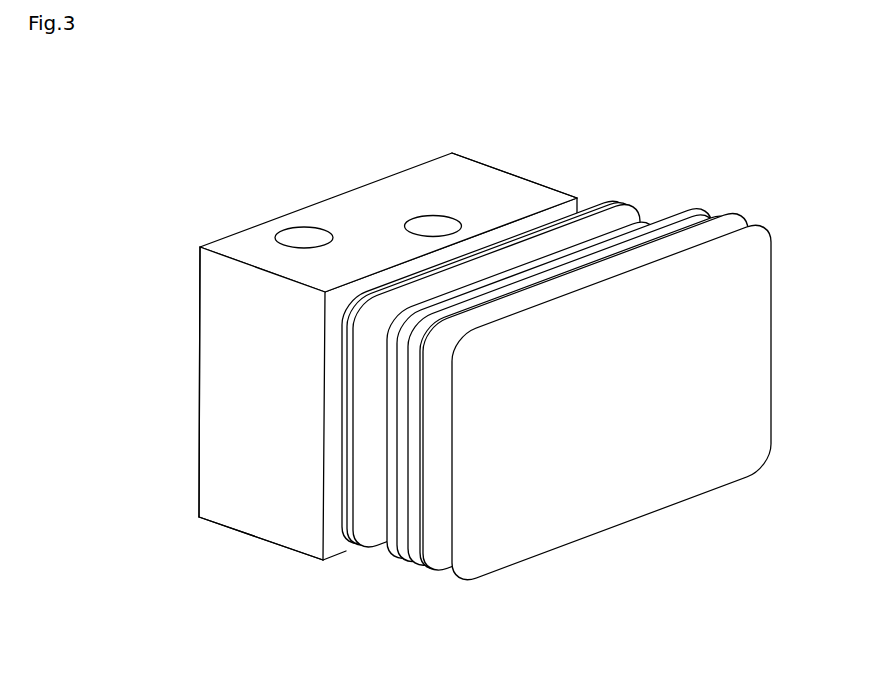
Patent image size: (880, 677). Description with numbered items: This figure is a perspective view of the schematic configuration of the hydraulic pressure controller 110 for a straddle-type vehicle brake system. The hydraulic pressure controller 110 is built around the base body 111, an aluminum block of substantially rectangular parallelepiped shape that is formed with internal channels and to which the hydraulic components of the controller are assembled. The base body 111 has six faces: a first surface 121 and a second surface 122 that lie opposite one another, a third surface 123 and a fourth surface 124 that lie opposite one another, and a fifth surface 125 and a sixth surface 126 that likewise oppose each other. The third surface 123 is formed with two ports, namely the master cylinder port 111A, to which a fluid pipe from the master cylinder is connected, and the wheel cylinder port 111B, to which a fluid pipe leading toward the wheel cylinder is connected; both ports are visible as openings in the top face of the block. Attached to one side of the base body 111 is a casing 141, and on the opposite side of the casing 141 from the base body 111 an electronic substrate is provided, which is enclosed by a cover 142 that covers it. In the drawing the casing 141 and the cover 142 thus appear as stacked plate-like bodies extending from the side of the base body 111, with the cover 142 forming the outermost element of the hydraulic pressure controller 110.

The hydraulic pressure controller 110 is at (459, 357).
The base body 111 is at (352, 357).
The master cylinder port 111A is at (292, 230).
The wheel cylinder port 111B is at (430, 215).
The first surface 121 is at (582, 208).
The second surface 122 is at (199, 483).
The third surface 123 is at (453, 170).
The fourth surface 124 is at (280, 547).
The fifth surface 125 is at (215, 320).
The sixth surface 126 is at (515, 170).
The casing 141 is at (373, 527).
The cover 142 is at (720, 475).